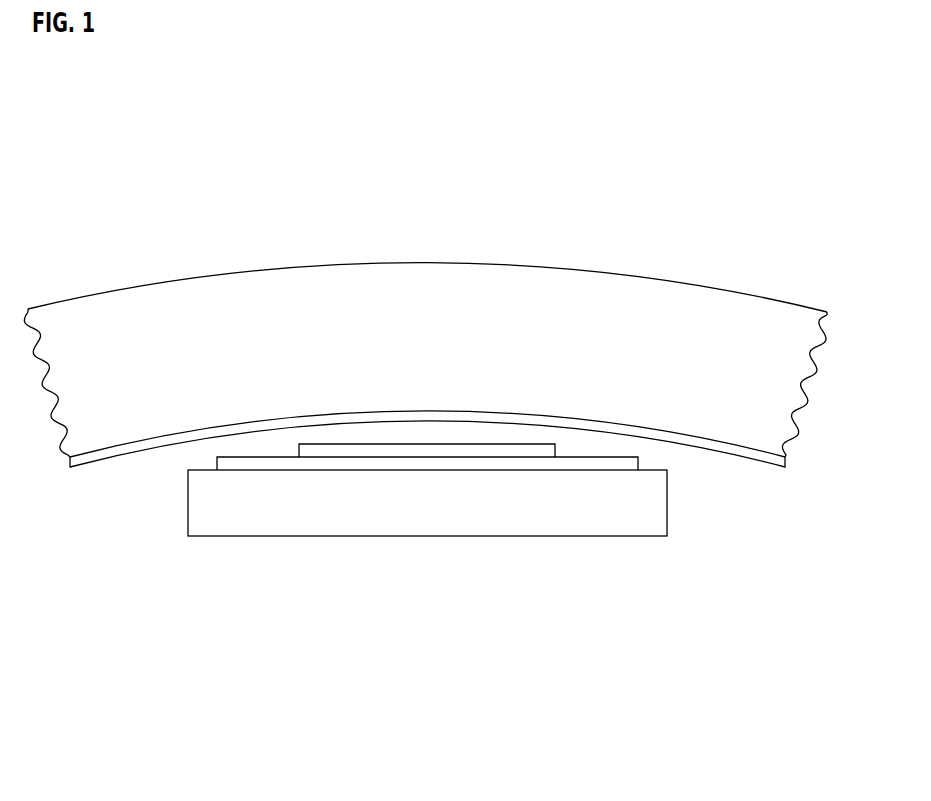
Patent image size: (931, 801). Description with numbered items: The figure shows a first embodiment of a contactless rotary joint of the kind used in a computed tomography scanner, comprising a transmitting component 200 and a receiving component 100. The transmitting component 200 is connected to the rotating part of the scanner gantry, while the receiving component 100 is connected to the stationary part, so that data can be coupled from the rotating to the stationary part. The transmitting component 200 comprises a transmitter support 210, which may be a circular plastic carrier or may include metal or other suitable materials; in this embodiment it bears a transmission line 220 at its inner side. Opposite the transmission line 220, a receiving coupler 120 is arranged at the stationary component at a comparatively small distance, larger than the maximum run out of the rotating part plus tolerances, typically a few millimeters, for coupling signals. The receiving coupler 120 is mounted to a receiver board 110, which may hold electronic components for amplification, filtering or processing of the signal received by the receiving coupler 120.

The receiving component 100 is at (427, 561).
The receiver board 110 is at (570, 518).
The receiving coupler 120 is at (400, 463).
The transmitting component 200 is at (425, 355).
The transmitter support 210 is at (430, 318).
The transmission line 220 is at (122, 452).